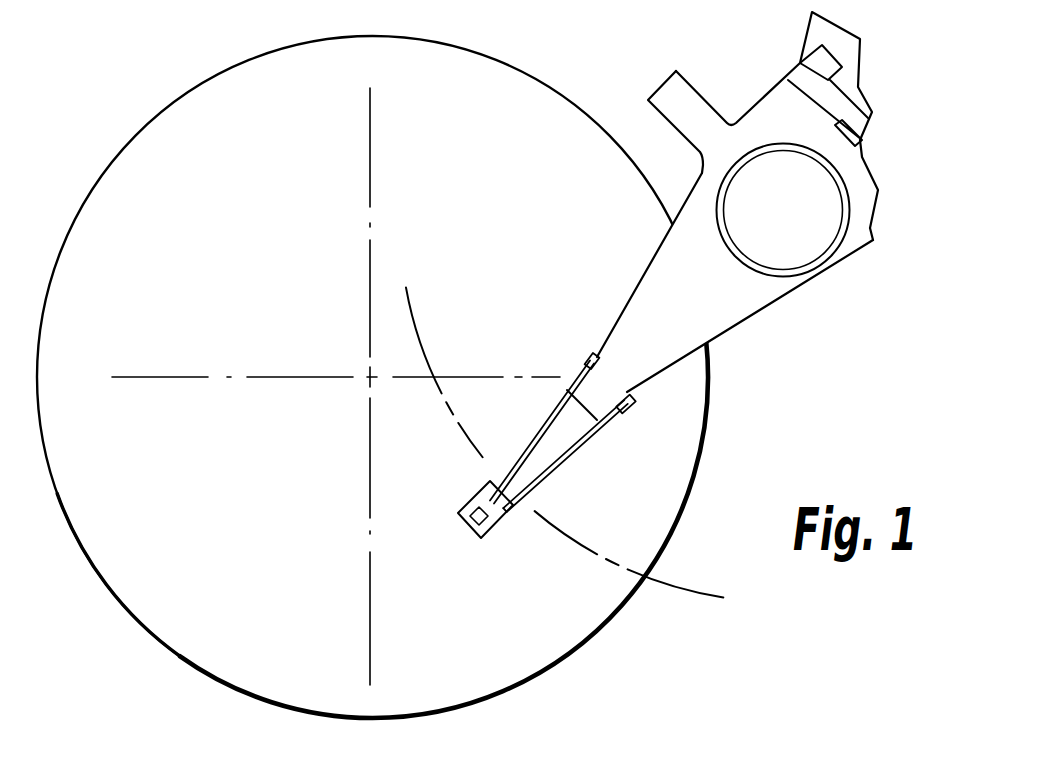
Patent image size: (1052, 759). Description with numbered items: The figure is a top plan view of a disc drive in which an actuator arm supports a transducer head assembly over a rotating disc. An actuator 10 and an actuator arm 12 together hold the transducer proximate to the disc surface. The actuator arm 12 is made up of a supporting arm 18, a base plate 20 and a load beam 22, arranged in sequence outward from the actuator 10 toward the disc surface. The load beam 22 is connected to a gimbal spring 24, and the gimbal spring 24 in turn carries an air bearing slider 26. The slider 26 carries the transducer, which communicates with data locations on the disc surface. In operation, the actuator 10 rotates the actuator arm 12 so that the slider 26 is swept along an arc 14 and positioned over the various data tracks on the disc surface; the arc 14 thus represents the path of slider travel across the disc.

The actuator 10 is at (800, 228).
The actuator arm 12 is at (740, 202).
The arc 14 is at (580, 540).
The supporting arm 18 is at (650, 263).
The base plate 20 is at (583, 367).
The load beam 22 is at (557, 430).
The gimbal spring 24 is at (463, 535).
The air bearing slider 26 is at (507, 513).